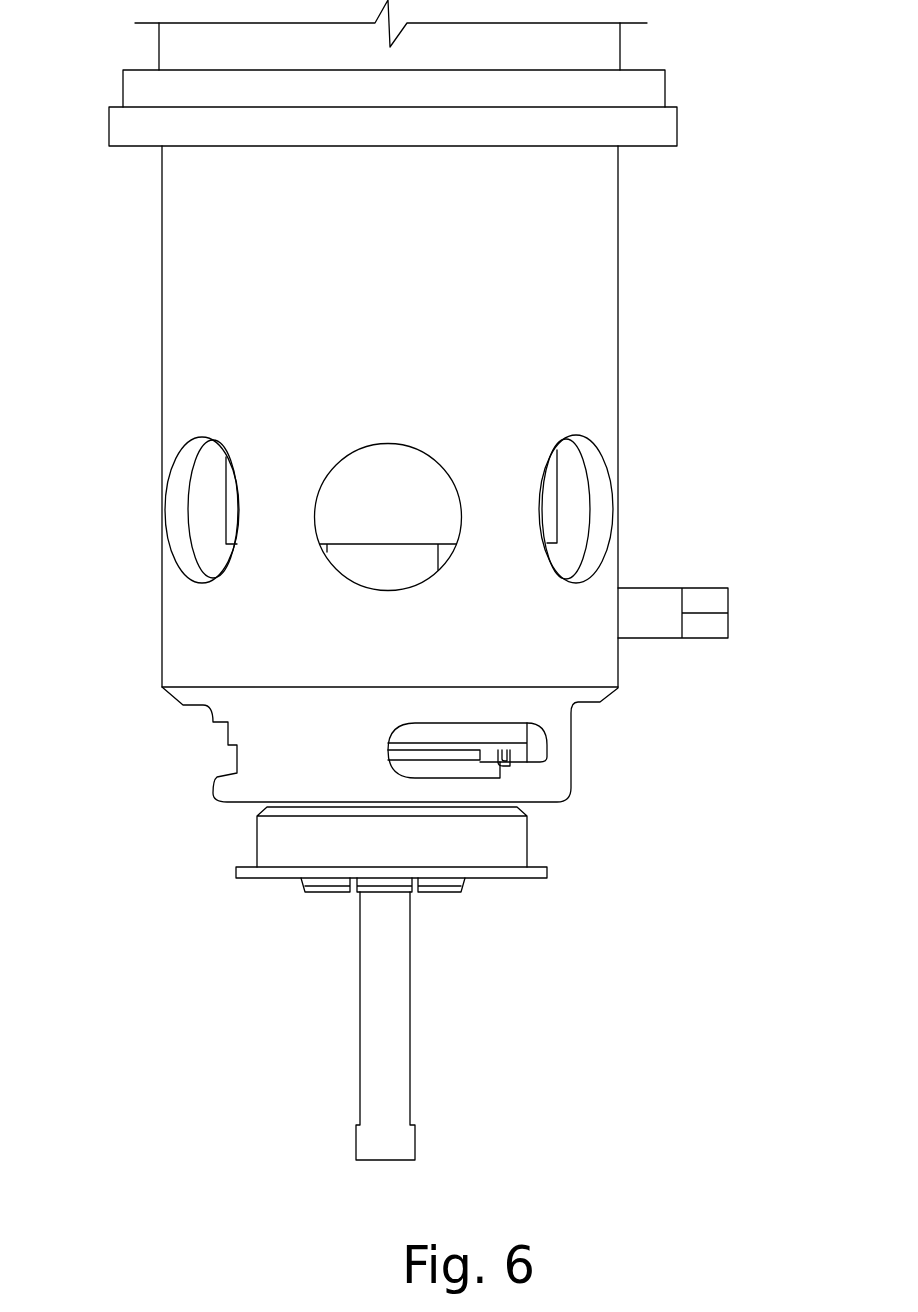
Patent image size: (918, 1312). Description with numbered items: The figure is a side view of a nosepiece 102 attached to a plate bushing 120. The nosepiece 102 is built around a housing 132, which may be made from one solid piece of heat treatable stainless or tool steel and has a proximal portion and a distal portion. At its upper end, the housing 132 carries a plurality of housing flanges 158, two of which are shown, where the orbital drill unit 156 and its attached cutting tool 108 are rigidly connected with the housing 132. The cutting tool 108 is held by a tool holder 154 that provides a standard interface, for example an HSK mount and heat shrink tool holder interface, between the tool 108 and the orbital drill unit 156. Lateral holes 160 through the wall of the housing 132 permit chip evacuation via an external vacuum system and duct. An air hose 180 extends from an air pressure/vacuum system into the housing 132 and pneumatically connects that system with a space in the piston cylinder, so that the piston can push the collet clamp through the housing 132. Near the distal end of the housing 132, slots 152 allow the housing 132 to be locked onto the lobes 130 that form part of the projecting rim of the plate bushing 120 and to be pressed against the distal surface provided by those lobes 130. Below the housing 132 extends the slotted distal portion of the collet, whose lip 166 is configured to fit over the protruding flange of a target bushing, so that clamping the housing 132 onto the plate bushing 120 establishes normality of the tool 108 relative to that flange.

The nosepiece 102 is at (737, 311).
The cutting tool 108 is at (410, 1010).
The plate bushing 120 is at (527, 840).
The lobes 130 is at (512, 768).
The housing 132 is at (162, 347).
The slots 152 is at (538, 752).
The tool holder 154 is at (440, 557).
The orbital drill unit 156 is at (620, 46).
The housing flanges 158 is at (677, 125).
The lateral holes 160 is at (208, 521).
The lip 166 is at (335, 892).
The air hose 180 is at (663, 640).